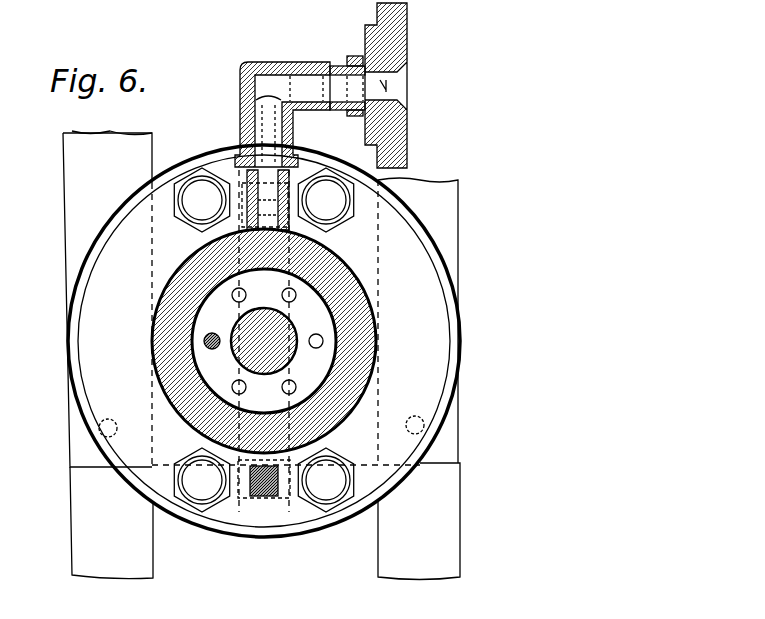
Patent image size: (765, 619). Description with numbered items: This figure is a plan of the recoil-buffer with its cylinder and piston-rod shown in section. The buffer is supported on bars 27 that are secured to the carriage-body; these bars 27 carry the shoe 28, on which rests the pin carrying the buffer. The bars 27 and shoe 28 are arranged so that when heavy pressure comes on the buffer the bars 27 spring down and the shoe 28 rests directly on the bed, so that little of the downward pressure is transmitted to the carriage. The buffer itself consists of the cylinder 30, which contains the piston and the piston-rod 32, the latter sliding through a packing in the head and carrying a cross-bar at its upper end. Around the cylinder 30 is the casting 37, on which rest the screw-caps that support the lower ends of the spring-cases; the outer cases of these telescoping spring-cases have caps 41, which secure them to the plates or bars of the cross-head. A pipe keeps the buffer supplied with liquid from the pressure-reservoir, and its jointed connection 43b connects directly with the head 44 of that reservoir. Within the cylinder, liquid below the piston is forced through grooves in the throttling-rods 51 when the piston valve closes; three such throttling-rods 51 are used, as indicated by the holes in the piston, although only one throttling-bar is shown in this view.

The bars 27 is at (265, 521).
The shoe 28 is at (58, 463).
The buffer cylinder 30 is at (353, 280).
The piston-rod 32 is at (264, 356).
The casting 37 is at (379, 320).
The caps 41 is at (340, 222).
The jointed connection 43b is at (294, 62).
The reservoir head 44 is at (407, 85).
The throttling-rods 51 is at (263, 333).